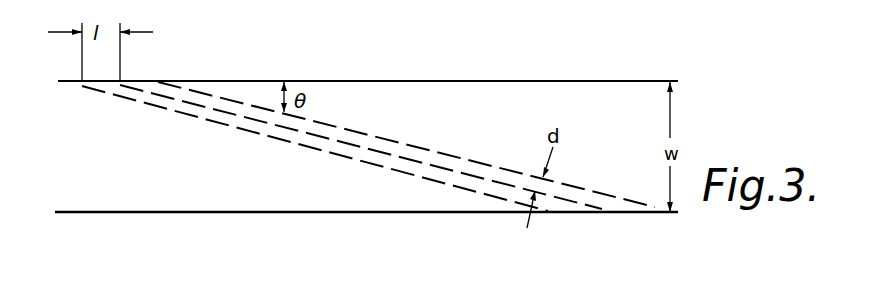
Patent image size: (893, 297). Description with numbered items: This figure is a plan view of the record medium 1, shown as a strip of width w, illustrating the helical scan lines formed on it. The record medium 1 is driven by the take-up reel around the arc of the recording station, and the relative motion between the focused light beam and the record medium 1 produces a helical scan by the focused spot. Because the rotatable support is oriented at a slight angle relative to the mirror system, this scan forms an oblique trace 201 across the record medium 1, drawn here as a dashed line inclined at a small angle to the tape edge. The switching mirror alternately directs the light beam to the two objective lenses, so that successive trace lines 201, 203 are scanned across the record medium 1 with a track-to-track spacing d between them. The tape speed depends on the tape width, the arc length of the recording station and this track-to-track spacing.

The record medium 1 is at (106, 179).
The trace 201 is at (271, 136).
The trace line 203 is at (345, 143).